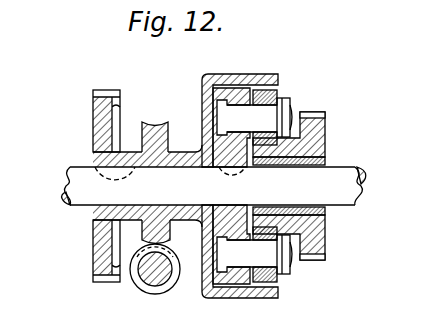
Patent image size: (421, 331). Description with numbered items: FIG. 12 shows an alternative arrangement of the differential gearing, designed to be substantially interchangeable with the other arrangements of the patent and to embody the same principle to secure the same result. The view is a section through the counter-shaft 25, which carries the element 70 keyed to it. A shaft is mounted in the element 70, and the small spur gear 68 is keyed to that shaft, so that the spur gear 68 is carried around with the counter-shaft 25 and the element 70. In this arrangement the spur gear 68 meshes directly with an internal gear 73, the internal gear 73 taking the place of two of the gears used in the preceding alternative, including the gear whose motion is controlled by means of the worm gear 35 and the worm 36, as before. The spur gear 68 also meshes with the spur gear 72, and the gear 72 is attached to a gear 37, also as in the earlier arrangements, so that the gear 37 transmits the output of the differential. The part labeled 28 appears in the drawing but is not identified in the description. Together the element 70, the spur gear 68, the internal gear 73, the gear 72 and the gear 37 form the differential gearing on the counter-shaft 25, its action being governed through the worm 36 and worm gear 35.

The counter-shaft 25 is at (352, 196).
The hub 28 is at (95, 238).
The worm gear 35 is at (153, 122).
The worm 36 is at (144, 284).
The gear 37 is at (326, 130).
The spur gear 68 is at (284, 97).
The element 70 is at (235, 95).
The spur gear 72 is at (322, 161).
The internal gear 73 is at (280, 83).